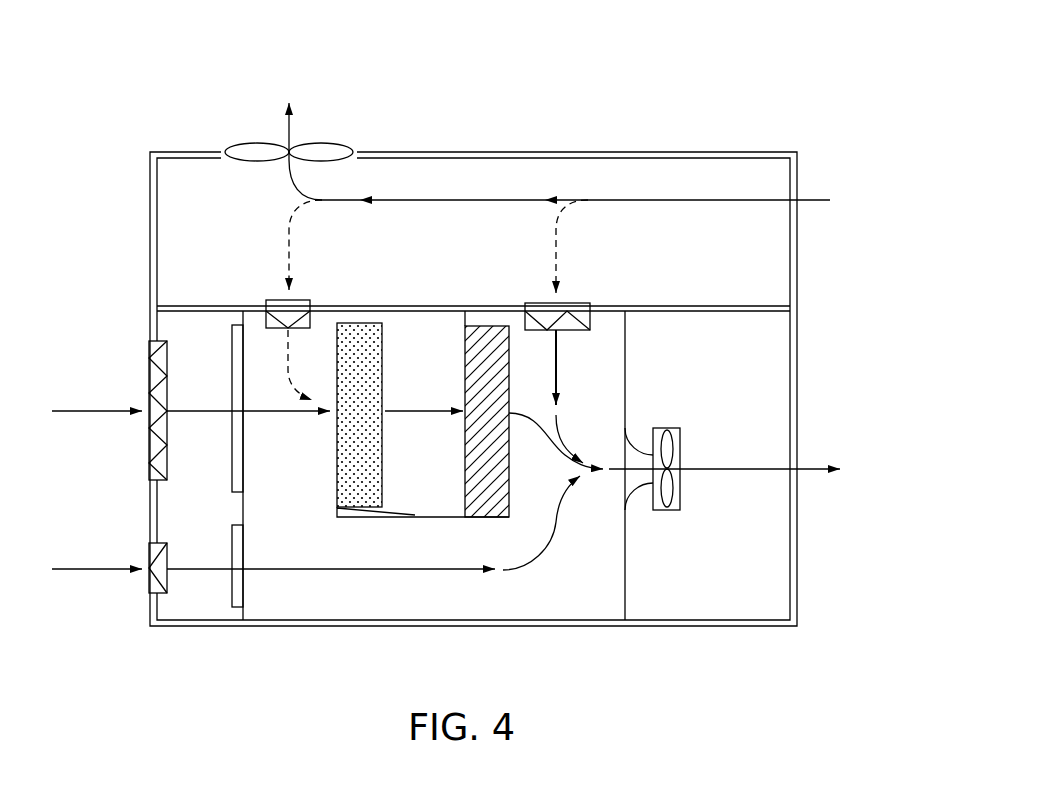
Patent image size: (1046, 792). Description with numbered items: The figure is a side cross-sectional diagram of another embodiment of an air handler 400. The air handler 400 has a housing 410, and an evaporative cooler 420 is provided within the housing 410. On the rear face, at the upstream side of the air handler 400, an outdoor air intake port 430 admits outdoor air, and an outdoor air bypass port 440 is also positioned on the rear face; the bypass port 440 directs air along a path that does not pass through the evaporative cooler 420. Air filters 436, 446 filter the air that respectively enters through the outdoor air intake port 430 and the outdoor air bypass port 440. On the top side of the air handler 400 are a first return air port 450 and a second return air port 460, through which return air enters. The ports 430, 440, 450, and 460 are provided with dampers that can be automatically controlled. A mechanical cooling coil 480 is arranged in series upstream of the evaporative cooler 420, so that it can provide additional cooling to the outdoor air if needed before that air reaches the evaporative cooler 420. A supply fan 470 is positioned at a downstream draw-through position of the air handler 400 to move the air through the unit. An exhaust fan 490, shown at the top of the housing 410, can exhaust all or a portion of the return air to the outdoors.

The air handler 400 is at (627, 78).
The housing 410 is at (672, 627).
The evaporative cooler 420 is at (466, 466).
The outdoor air intake port 430 is at (142, 365).
The air filter 436 is at (237, 342).
The outdoor air bypass port 440 is at (142, 553).
The air filter 446 is at (237, 540).
The first return air port 450 is at (583, 293).
The second return air port 460 is at (307, 292).
The supply fan 470 is at (681, 440).
The mechanical cooling coil 480 is at (340, 467).
The exhaust fan 490 is at (338, 143).